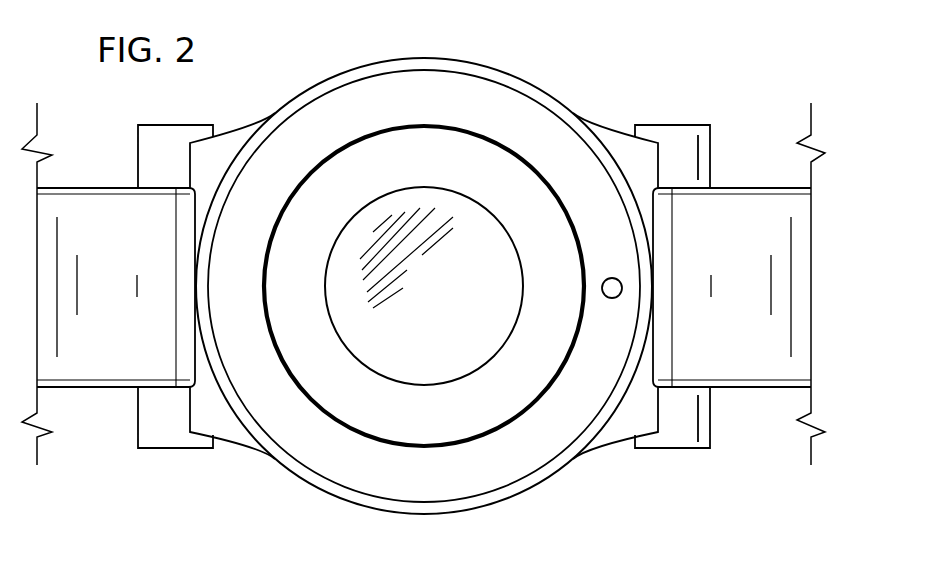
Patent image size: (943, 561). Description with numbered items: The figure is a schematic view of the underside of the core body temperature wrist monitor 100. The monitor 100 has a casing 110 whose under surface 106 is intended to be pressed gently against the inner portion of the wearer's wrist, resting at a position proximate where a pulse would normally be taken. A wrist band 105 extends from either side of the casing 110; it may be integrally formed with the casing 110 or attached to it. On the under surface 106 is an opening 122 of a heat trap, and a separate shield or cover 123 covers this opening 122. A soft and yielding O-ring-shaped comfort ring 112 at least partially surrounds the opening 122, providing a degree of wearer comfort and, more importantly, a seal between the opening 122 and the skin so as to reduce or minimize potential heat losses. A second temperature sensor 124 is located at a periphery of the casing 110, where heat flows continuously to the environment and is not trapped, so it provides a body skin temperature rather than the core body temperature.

The core body temperature wrist monitor 100 is at (423, 263).
The wrist band 105 is at (97, 187).
The under surface 106 is at (382, 90).
The casing 110 is at (597, 65).
The comfort ring 112 is at (448, 448).
The opening 122 is at (424, 281).
The shield or cover 123 is at (464, 355).
The second temperature sensor 124 is at (610, 278).